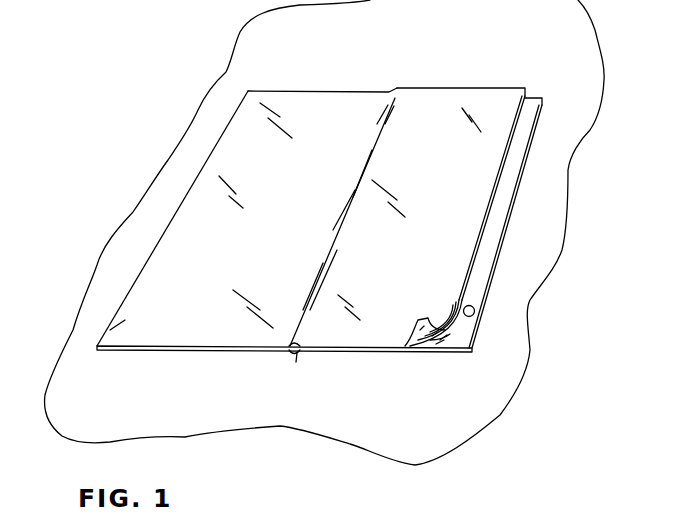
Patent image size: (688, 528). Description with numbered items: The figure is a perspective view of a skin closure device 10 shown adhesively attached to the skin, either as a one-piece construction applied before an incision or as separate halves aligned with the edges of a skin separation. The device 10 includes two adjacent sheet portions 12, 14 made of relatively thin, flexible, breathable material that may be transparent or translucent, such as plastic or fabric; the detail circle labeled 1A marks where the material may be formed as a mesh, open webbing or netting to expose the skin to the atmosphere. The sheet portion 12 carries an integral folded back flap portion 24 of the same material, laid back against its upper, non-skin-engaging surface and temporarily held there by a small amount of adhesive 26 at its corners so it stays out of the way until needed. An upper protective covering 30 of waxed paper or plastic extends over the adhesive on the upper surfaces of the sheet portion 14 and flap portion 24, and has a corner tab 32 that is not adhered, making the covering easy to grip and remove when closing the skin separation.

The skin closure device 10 is at (485, 57).
The sheet portion 12 is at (401, 352).
The sheet portion 14 is at (223, 349).
The folded back flap portion 24 is at (350, 351).
The adhesive 26 is at (439, 335).
The upper protective covering 30 is at (150, 320).
The corner tab 32 is at (429, 319).
The detail view indicator circle 1A is at (475, 311).